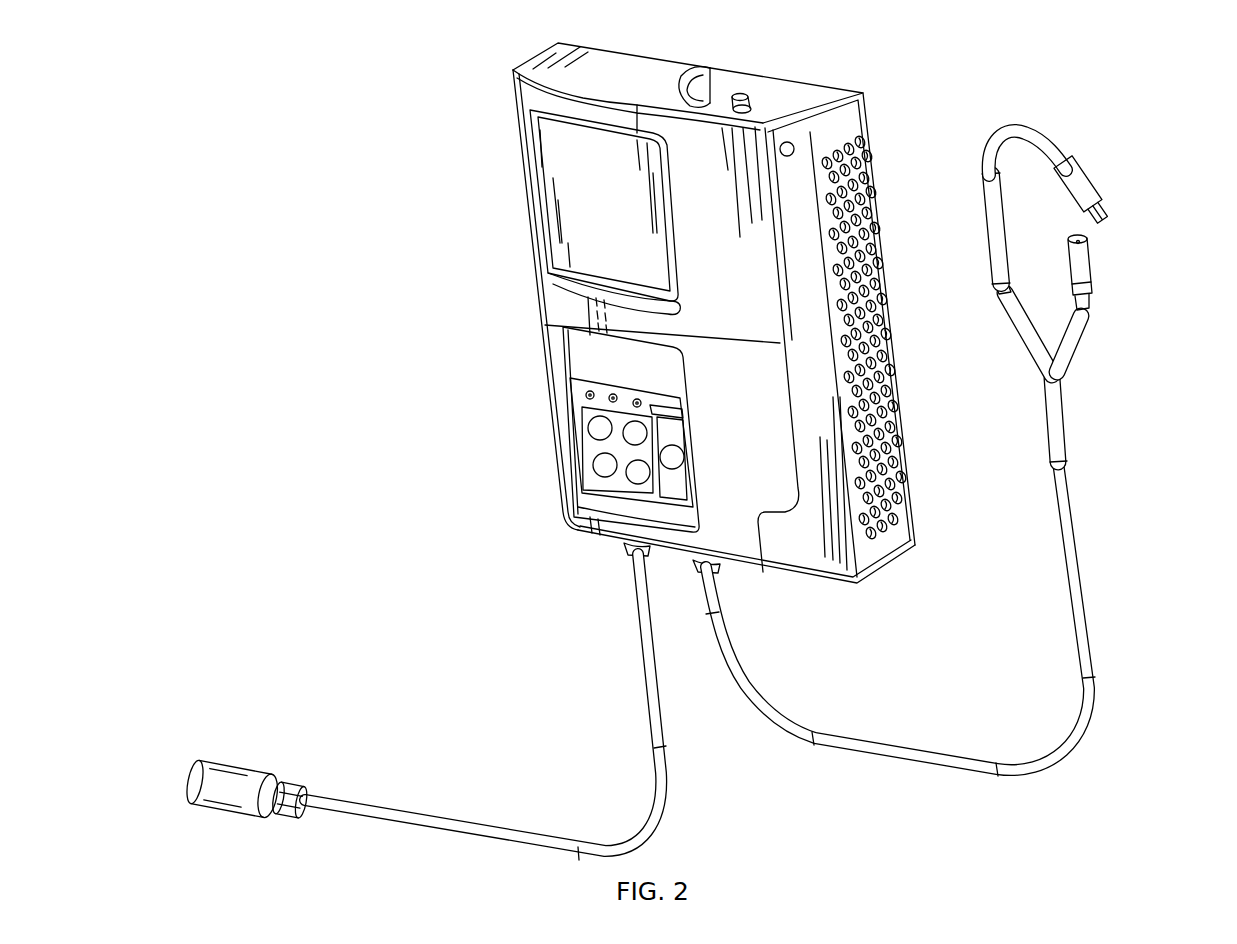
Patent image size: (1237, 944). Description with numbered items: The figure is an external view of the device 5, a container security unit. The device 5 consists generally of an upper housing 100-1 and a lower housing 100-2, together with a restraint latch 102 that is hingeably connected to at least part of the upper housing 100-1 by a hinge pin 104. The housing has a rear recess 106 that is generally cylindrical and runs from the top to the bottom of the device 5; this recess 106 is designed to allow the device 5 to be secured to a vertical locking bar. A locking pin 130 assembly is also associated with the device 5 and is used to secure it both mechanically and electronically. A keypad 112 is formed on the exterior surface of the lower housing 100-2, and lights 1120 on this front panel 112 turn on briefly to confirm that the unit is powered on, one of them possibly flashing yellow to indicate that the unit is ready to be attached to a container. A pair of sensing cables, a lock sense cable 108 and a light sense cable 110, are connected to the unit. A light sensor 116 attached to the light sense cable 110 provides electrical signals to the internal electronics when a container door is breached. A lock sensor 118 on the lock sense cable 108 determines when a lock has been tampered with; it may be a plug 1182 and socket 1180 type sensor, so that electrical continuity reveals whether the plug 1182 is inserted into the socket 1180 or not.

The device 5 is at (354, 140).
The upper housing 100-1 is at (528, 245).
The lower housing 100-2 is at (549, 460).
The restraint latch 102 is at (894, 563).
The hinge pin 104 is at (794, 148).
The rear recess 106 is at (717, 79).
The lock sense cable 108 is at (893, 742).
The light sense cable 110 is at (488, 826).
The keypad 112 is at (576, 488).
The light sensor 116 is at (233, 764).
The lock sensor 118 is at (1052, 228).
The locking pin 130 is at (720, 84).
The lights 1120 is at (611, 399).
The socket 1180 is at (1092, 272).
The plug 1182 is at (1092, 172).